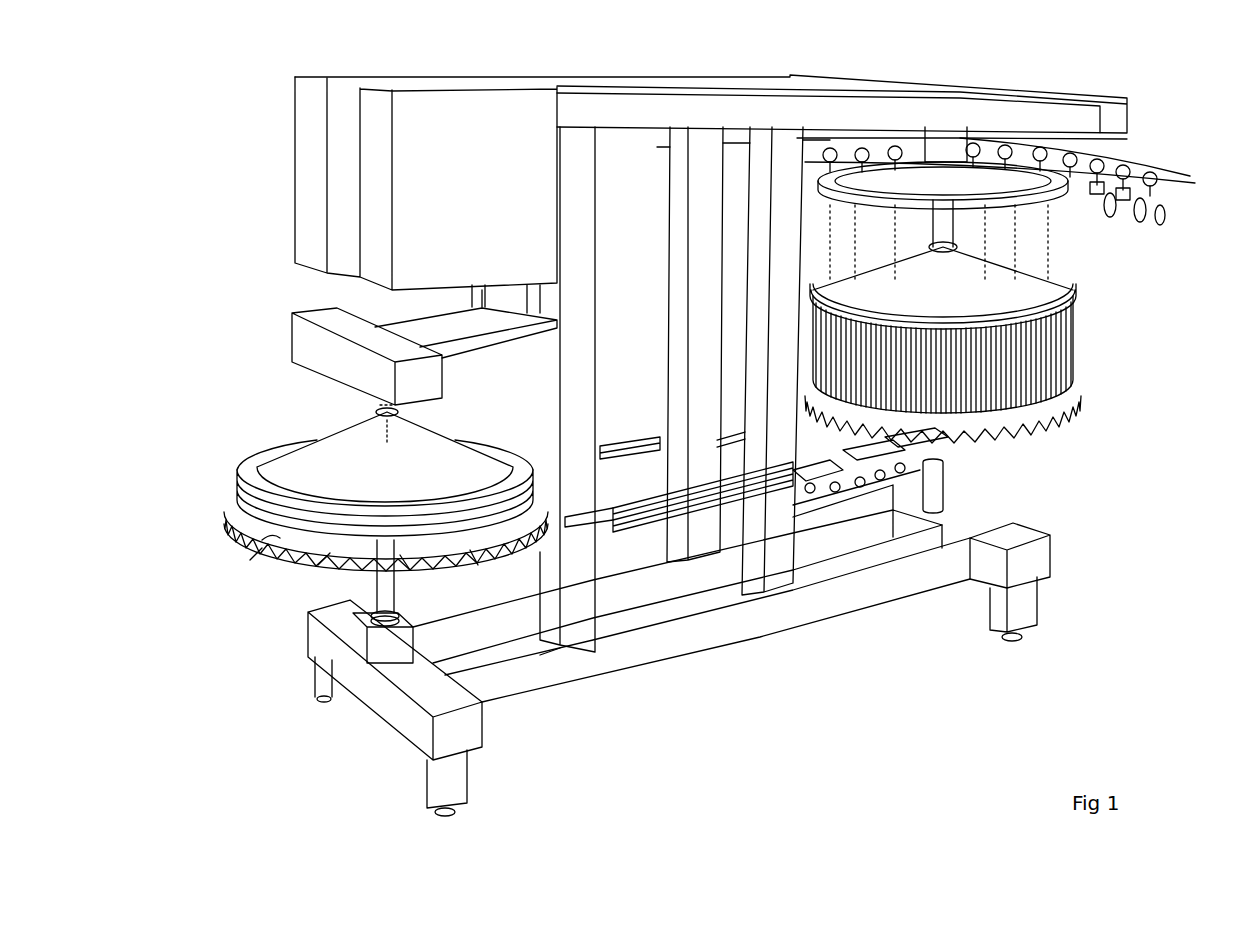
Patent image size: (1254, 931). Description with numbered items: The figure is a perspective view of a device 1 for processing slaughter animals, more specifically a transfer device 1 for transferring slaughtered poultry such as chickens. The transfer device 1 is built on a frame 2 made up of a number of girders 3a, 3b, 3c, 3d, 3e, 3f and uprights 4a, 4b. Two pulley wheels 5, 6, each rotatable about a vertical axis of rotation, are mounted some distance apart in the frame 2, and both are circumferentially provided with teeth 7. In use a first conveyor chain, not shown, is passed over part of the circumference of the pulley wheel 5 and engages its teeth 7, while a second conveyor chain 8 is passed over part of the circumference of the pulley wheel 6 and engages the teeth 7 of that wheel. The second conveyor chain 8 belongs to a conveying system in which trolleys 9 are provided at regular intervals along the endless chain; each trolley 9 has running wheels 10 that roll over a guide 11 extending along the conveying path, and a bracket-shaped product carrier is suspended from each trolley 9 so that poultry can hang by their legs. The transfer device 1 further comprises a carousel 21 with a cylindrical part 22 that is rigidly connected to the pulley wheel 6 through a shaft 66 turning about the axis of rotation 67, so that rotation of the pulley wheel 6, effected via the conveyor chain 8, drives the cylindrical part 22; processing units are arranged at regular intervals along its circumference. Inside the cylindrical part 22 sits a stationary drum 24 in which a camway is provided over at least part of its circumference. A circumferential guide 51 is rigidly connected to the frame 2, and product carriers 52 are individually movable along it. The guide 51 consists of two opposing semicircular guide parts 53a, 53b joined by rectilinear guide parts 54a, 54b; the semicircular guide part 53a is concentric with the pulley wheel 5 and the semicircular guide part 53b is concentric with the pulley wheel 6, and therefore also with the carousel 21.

The transfer device 1 is at (1192, 550).
The frame 2 is at (878, 640).
The girder 3a is at (640, 583).
The girder 3b is at (632, 122).
The girder 3c is at (388, 315).
The girder 3d is at (322, 357).
The girder 3e is at (992, 522).
The girder 3f is at (390, 703).
The upright 4a is at (513, 300).
The upright 4b is at (690, 214).
The pulley wheel 5 is at (318, 450).
The pulley wheel 6 is at (1000, 177).
The teeth 7 is at (268, 557).
The second conveyor chain 8 is at (1108, 220).
The trolley 9 is at (1140, 183).
The running wheels 10 is at (1133, 172).
The guide 11 is at (1172, 180).
The carousel 21 is at (1155, 362).
The cylindrical part 22 is at (1086, 340).
The stationary drum 24 is at (943, 362).
The circumferential guide 51 is at (697, 540).
The product carriers 52 is at (318, 562).
The semicircular guide part 53a is at (280, 589).
The semicircular guide part 53b is at (1096, 402).
The rectilinear guide part 54a is at (625, 427).
The rectilinear guide part 54b is at (742, 520).
The shaft 66 is at (955, 220).
The axis of rotation 67 is at (940, 240).